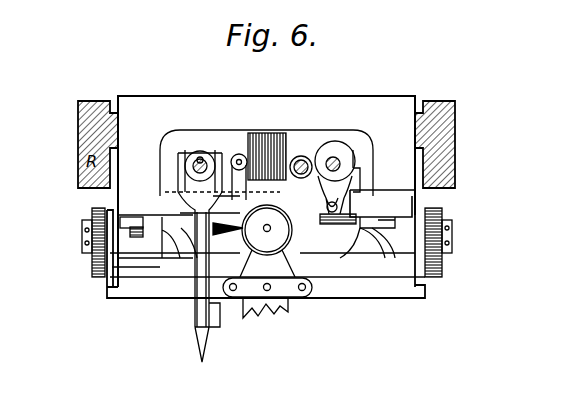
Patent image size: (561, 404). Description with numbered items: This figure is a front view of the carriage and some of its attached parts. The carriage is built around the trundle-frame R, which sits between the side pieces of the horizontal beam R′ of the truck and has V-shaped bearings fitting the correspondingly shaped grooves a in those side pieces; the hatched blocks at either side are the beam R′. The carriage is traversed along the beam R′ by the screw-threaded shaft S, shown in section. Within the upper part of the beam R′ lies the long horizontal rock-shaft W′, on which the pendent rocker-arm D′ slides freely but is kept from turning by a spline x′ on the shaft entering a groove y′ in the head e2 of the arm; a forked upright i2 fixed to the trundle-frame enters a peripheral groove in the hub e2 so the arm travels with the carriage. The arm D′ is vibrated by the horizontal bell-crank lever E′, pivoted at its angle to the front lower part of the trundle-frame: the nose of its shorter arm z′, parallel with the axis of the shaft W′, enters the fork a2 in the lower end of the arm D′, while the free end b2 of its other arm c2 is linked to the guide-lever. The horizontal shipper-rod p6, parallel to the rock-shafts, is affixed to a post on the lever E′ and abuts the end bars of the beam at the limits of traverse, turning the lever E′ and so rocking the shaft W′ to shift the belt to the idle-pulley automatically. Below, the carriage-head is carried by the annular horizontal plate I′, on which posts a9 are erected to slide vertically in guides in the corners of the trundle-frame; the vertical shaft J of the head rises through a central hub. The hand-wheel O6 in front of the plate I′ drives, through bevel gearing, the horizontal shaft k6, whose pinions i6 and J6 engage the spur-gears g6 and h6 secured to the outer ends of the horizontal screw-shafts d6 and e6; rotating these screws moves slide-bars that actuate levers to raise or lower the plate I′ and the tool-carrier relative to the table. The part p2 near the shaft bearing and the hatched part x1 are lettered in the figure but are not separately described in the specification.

The trundle-frame R is at (266, 197).
The horizontal beam R′ is at (421, 135).
The grooves a is at (115, 131).
The fork a2 is at (352, 212).
The posts a9 is at (148, 228).
The free end of lever arm b2 is at (163, 226).
The lever arm c2 is at (179, 237).
The vertical shaft J is at (180, 186).
The pin p2 is at (201, 158).
The shipper-rod p6 is at (243, 169).
The roller x1 is at (267, 156).
The spline x′ is at (331, 157).
The groove y′ is at (334, 157).
The screw-threaded shaft S is at (303, 158).
The rock-shaft W′ is at (341, 161).
The forked upright i2 is at (360, 170).
The head of rocker-arm e2 is at (328, 179).
The pendent rocker-arm D′ is at (339, 182).
The shorter arm of bell-crank lever z′ is at (320, 218).
The hand-wheel O6 is at (267, 241).
The bell-crank lever E′ is at (211, 220).
The annular horizontal plate I′ is at (309, 273).
The pinion J6 is at (87, 238).
The horizontal shaft k6 is at (82, 230).
The screw-shaft e6 is at (82, 243).
The spur-gear h6 is at (93, 257).
The pinion i6 is at (442, 218).
The screw-shaft d6 is at (452, 243).
The spur-gear g6 is at (452, 267).